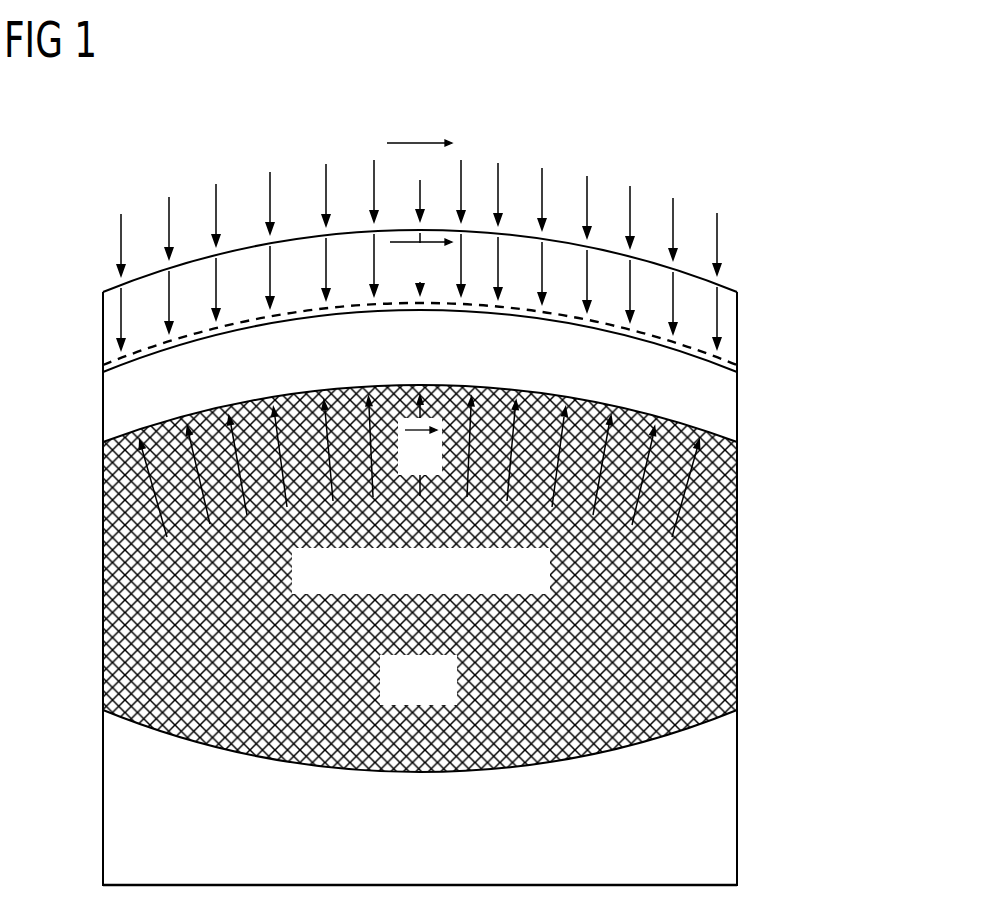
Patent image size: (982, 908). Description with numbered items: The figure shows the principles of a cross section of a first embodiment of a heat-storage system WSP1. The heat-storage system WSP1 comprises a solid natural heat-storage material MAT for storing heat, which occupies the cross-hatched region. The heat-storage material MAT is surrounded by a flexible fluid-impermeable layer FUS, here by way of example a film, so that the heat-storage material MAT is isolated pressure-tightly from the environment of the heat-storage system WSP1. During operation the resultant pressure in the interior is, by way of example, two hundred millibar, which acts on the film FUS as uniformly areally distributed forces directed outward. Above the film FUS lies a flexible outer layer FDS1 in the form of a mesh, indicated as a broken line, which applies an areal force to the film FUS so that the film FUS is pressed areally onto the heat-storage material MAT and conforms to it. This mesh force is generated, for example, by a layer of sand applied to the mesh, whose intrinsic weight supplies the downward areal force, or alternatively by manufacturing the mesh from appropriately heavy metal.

The heat-storage system WSP1 is at (746, 310).
The heat-storage material MAT is at (420, 578).
The flexible fluid-impermeable layer FUS is at (340, 316).
The flexible outer layer FDS1 is at (688, 347).